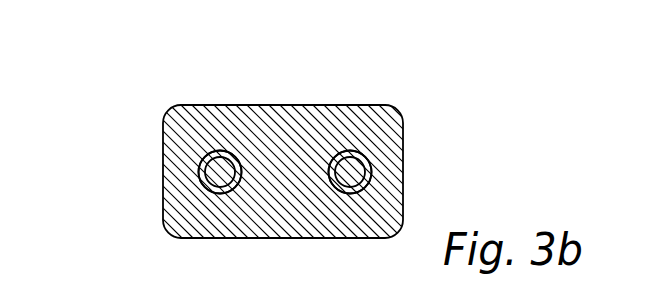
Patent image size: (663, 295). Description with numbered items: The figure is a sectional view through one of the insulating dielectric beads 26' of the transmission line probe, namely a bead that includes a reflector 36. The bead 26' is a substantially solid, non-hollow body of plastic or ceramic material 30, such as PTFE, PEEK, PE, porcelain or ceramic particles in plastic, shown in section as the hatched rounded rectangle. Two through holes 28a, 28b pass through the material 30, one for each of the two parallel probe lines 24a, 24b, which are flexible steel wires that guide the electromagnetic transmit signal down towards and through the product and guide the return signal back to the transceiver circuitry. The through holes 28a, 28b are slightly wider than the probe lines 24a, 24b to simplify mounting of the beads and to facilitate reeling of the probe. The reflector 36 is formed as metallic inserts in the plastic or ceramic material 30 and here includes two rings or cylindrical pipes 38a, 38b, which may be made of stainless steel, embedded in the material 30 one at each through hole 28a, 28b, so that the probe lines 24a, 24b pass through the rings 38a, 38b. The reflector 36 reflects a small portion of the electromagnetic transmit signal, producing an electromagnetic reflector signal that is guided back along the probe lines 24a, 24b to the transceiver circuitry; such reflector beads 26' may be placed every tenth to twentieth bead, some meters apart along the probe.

The insulating dielectric bead including a reflector 26' is at (228, 164).
The plastic or ceramic material 30 is at (175, 158).
The reflector 36 is at (338, 57).
The ring or cylindrical pipe 38a is at (241, 152).
The ring or cylindrical pipe 38b is at (336, 152).
The probe line 24a is at (214, 171).
The probe line 24b is at (344, 172).
The through hole 28a is at (234, 188).
The through hole 28b is at (355, 192).